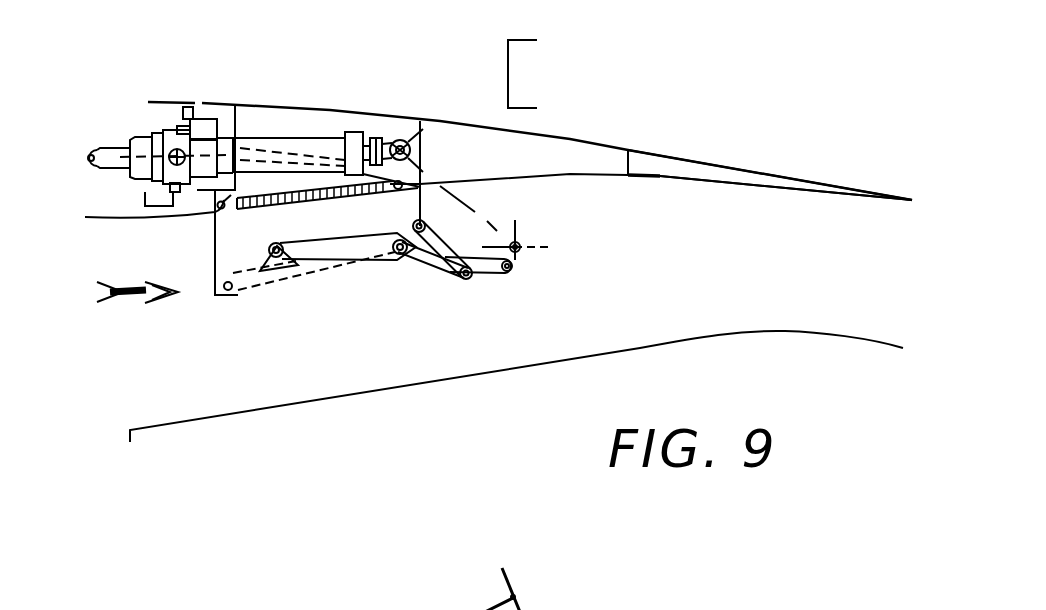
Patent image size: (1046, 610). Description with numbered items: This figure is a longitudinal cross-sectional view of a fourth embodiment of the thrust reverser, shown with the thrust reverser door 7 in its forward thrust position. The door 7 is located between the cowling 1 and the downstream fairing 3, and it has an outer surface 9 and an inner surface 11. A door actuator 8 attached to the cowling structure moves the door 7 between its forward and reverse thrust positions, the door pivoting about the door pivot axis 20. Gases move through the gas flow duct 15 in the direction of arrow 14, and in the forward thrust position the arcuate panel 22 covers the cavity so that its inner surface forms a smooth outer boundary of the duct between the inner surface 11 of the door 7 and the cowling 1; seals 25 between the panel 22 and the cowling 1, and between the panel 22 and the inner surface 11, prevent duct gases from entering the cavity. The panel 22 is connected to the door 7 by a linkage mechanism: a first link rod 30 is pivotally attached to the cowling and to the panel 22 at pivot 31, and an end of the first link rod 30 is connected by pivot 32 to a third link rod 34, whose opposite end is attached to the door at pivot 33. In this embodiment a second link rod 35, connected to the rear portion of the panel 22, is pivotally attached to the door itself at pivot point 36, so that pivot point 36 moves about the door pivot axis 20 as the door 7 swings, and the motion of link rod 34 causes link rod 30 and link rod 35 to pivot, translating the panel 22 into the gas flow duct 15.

The cowling 1 is at (165, 100).
The downstream fairing 3 is at (717, 163).
The thrust reverser door 7 is at (448, 150).
The door actuator 8 is at (292, 148).
The outer surface 9 is at (597, 140).
The inner surface 11 is at (565, 177).
The arrow 14 is at (137, 311).
The gas flow duct 15 is at (816, 260).
The door pivot axis 20 is at (522, 244).
The panel 22 is at (277, 203).
The seals 25 is at (225, 203).
The first link rod 30 is at (348, 243).
The pivot 31 is at (284, 262).
The pivot 32 is at (465, 277).
The pivot 33 is at (423, 223).
The third link rod 34 is at (445, 240).
The second link rod 35 is at (480, 265).
The pivot point 36 is at (509, 272).